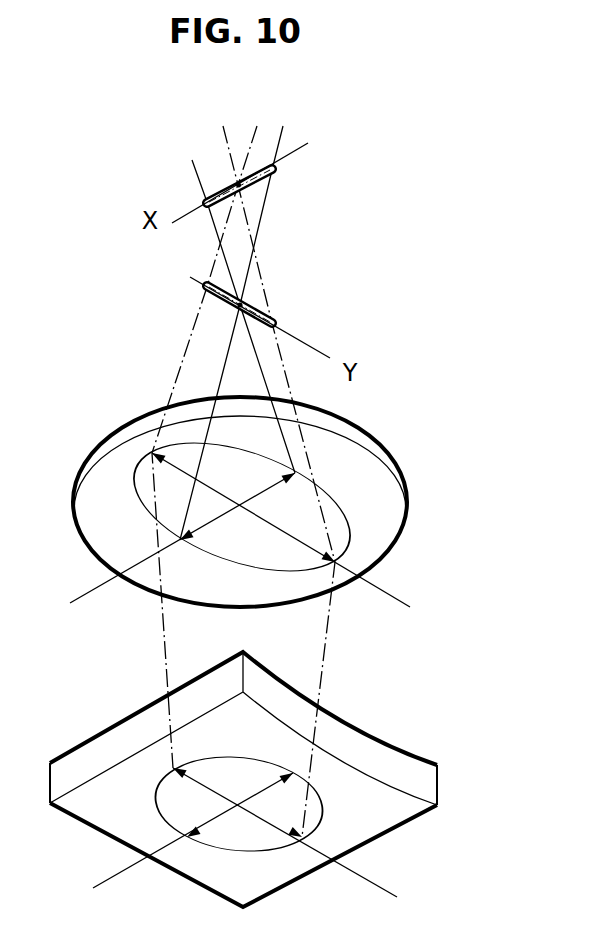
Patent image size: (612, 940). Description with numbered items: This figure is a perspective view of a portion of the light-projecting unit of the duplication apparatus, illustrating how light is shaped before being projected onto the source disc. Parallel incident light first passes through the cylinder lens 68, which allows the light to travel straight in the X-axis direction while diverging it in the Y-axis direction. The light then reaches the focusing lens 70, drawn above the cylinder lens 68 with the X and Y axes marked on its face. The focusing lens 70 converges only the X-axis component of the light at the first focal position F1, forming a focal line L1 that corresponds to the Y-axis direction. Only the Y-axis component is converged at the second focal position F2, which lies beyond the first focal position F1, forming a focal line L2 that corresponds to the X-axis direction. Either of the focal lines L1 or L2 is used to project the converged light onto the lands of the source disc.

The focusing lens 70 is at (407, 488).
The cylinder lens 68 is at (437, 787).
The focal line L1 is at (207, 288).
The focal line L2 is at (275, 171).
The first focal position F1 is at (243, 307).
The second focal position F2 is at (235, 182).